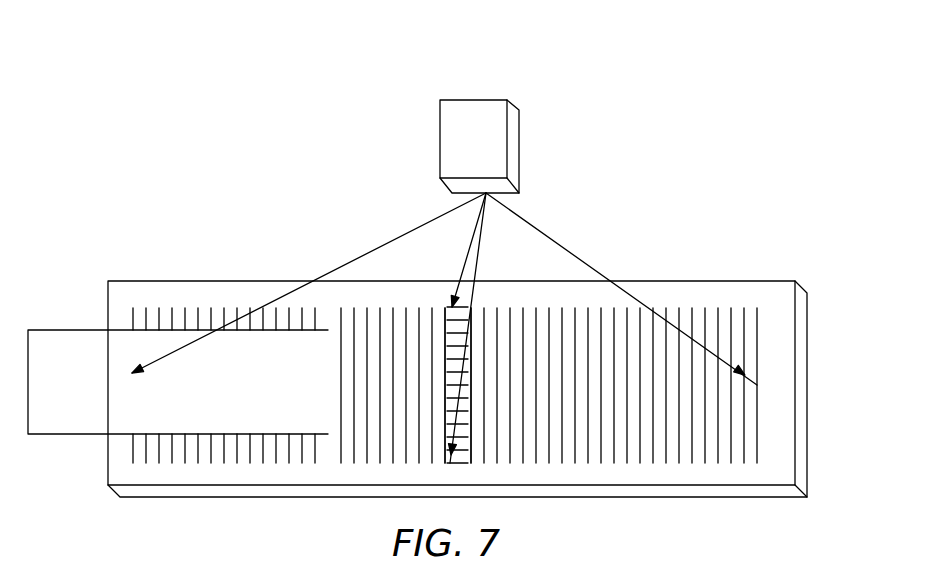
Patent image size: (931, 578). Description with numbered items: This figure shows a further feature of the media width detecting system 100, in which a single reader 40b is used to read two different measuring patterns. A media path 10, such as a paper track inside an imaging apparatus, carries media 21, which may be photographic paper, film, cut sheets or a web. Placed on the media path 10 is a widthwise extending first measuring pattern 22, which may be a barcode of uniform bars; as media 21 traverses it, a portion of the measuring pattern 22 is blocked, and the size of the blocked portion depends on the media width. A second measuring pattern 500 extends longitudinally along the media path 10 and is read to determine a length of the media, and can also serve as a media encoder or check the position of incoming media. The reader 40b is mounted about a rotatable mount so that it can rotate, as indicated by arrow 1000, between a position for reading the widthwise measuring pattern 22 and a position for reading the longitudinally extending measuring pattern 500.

The media path 10 is at (685, 280).
The media 21 is at (83, 348).
The measuring pattern 22 is at (450, 342).
The reader 40b is at (628, 112).
The media width detecting system 100 is at (410, 125).
The second measuring pattern 500 is at (198, 308).
The arrow 1000 is at (555, 137).